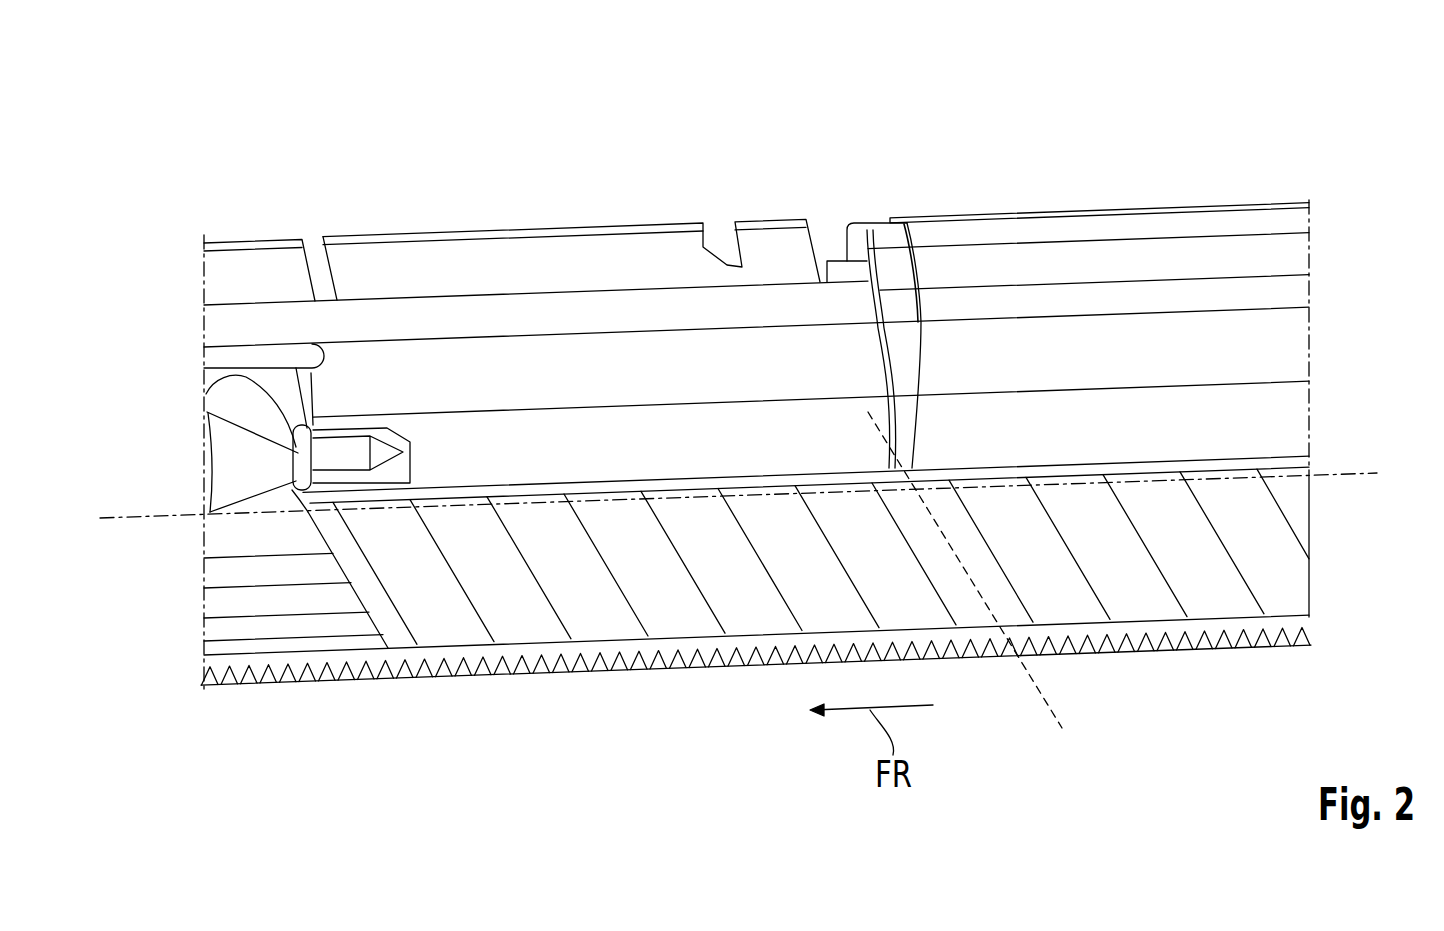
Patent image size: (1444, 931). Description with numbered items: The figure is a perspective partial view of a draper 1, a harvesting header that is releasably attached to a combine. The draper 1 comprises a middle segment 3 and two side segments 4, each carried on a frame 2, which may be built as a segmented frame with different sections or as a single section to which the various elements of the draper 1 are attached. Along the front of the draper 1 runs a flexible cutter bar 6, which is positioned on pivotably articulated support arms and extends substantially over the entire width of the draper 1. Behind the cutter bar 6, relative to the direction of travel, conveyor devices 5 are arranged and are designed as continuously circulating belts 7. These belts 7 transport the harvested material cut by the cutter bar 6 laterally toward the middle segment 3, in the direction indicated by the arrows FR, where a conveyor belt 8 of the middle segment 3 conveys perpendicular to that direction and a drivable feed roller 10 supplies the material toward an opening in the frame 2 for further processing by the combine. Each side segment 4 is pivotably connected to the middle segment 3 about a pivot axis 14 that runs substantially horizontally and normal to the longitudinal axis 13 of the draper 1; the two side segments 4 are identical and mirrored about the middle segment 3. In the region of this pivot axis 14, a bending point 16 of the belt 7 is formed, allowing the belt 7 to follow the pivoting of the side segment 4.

The draper 1 is at (1299, 124).
The frame 2 is at (468, 362).
The middle segment 3 is at (598, 228).
The side segment 4 is at (1089, 210).
The conveyor device 5 is at (736, 653).
The flexible cutter bar 6 is at (338, 685).
The continuously circulating belt 7 is at (520, 608).
The conveyor belt 8 is at (264, 607).
The feed roller 10 is at (232, 428).
The longitudinal axis 13 is at (110, 517).
The pivot axis 14 is at (1050, 710).
The bending point 16 is at (911, 469).